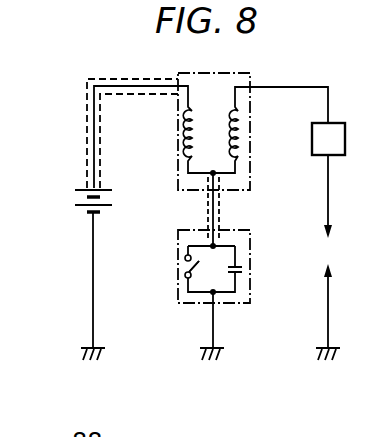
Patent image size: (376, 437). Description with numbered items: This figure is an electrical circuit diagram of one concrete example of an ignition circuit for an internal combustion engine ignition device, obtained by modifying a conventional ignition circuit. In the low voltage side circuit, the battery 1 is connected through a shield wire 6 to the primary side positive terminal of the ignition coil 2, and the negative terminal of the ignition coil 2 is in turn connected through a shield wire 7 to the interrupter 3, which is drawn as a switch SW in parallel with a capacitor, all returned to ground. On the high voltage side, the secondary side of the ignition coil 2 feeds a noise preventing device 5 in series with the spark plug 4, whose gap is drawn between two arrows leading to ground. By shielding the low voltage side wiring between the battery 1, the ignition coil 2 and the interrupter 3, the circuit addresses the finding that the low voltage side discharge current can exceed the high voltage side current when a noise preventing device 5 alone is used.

The battery 1 is at (75, 200).
The ignition coil 2 is at (237, 73).
The interrupter 3 is at (231, 304).
The spark plug 4 is at (330, 251).
The noise preventing device 5 is at (345, 140).
The shield wire 6 is at (80, 116).
The connecting wire 7 is at (228, 208).
The switch SW is at (185, 268).